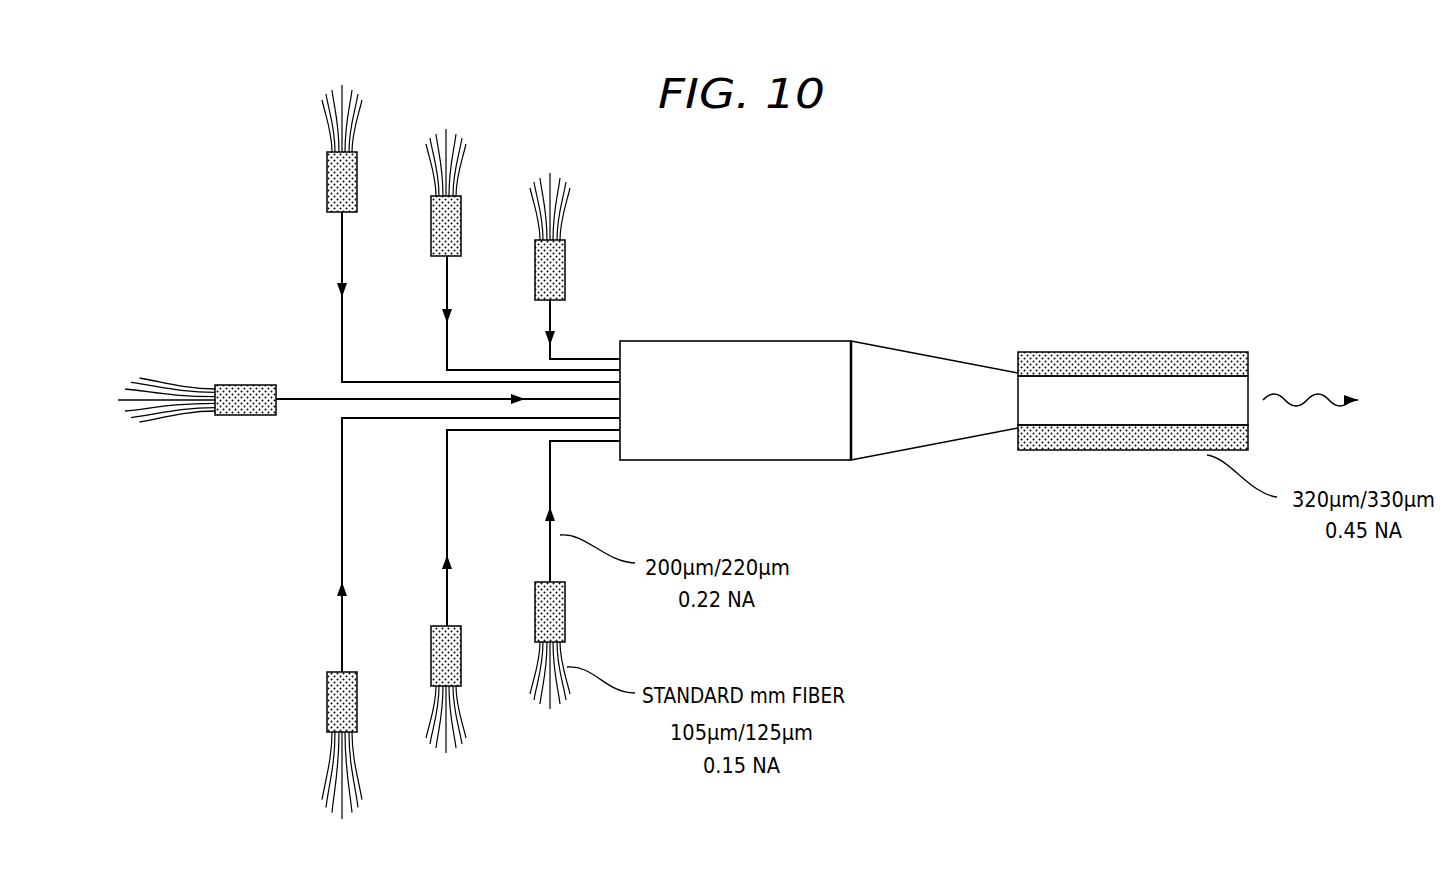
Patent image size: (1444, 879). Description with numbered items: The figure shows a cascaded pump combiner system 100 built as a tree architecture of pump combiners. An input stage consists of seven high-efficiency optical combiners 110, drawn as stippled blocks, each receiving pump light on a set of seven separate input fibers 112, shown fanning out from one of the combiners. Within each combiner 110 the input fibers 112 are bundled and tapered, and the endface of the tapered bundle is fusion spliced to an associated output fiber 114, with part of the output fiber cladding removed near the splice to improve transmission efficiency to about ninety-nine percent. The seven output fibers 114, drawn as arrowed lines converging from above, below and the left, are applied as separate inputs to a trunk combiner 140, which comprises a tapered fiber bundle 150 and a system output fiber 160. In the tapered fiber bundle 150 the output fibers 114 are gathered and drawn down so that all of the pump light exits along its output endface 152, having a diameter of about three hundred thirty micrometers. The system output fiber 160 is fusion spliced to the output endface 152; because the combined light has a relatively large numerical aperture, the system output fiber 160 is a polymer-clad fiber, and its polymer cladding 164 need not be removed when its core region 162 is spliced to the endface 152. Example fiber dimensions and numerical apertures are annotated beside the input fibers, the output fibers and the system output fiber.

The cascaded pump combiner system 100 is at (1019, 175).
The high-efficiency optical combiner 110 is at (327, 707).
The input fiber 112 is at (385, 766).
The output fiber 114 is at (550, 558).
The trunk combiner 140 is at (934, 412).
The tapered fiber bundle 150 is at (1015, 322).
The output endface 152 is at (1015, 398).
The system output fiber 160 is at (1188, 393).
The core region 162 is at (1140, 412).
The polymer cladding 164 is at (1248, 362).